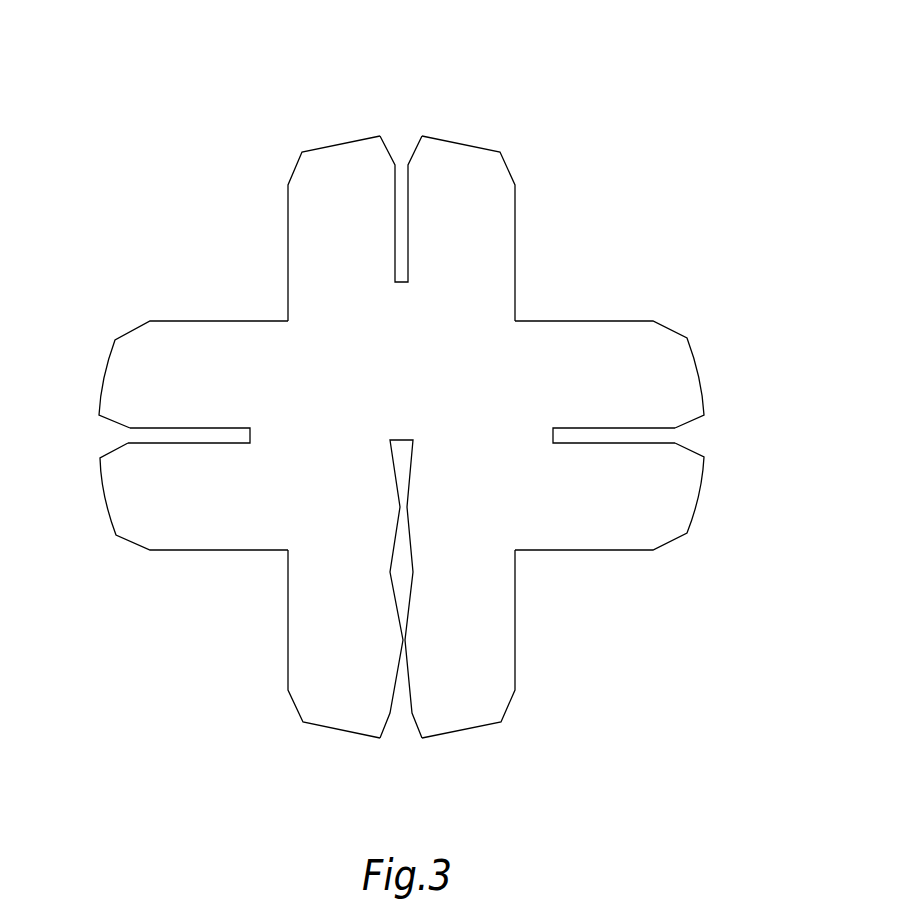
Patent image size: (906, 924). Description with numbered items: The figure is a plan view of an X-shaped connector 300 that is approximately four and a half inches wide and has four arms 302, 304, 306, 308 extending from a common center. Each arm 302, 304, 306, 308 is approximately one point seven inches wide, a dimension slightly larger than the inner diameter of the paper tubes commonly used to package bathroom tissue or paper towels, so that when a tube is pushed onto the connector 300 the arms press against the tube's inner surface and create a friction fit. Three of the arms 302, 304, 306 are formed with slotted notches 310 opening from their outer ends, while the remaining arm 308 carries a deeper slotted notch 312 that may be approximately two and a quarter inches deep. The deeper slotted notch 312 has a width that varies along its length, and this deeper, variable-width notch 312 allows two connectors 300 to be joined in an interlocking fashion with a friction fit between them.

The X-shaped connector 300 is at (403, 426).
The arm 302 is at (288, 213).
The arm 304 is at (220, 321).
The arm 306 is at (585, 321).
The arm 308 is at (288, 618).
The slotted notch 310 is at (402, 140).
The deeper slotted notch 312 is at (405, 733).